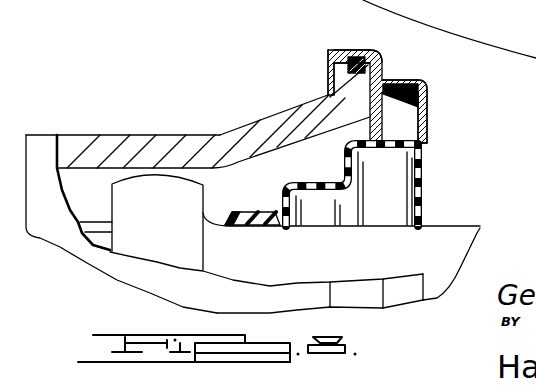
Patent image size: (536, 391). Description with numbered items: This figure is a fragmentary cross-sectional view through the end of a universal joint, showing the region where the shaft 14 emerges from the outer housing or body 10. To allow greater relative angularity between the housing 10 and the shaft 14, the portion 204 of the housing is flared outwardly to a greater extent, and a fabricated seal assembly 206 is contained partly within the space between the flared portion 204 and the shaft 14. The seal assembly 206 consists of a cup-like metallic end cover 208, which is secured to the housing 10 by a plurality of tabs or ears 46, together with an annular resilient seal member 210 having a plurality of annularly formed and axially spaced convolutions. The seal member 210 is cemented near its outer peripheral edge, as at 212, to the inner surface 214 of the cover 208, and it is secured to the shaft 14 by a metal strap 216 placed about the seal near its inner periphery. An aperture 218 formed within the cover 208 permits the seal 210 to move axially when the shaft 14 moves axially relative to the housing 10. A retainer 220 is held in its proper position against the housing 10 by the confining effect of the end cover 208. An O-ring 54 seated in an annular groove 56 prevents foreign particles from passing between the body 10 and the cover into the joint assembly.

The outer housing or body 10 is at (88, 134).
The shaft 14 is at (459, 228).
The tabs or ears 46 is at (328, 60).
The O-ring 54 is at (363, 50).
The annular groove 56 is at (345, 64).
The flared portion 204 is at (261, 163).
The fabricated seal assembly 206 is at (417, 44).
The cup-like metallic end cover 208 is at (337, 50).
The annular resilient seal member 210 is at (350, 168).
The cemented joint 212 is at (392, 95).
The inner surface 214 is at (418, 94).
The metal strap 216 is at (248, 209).
The aperture 218 is at (428, 115).
The retainer 220 is at (368, 101).